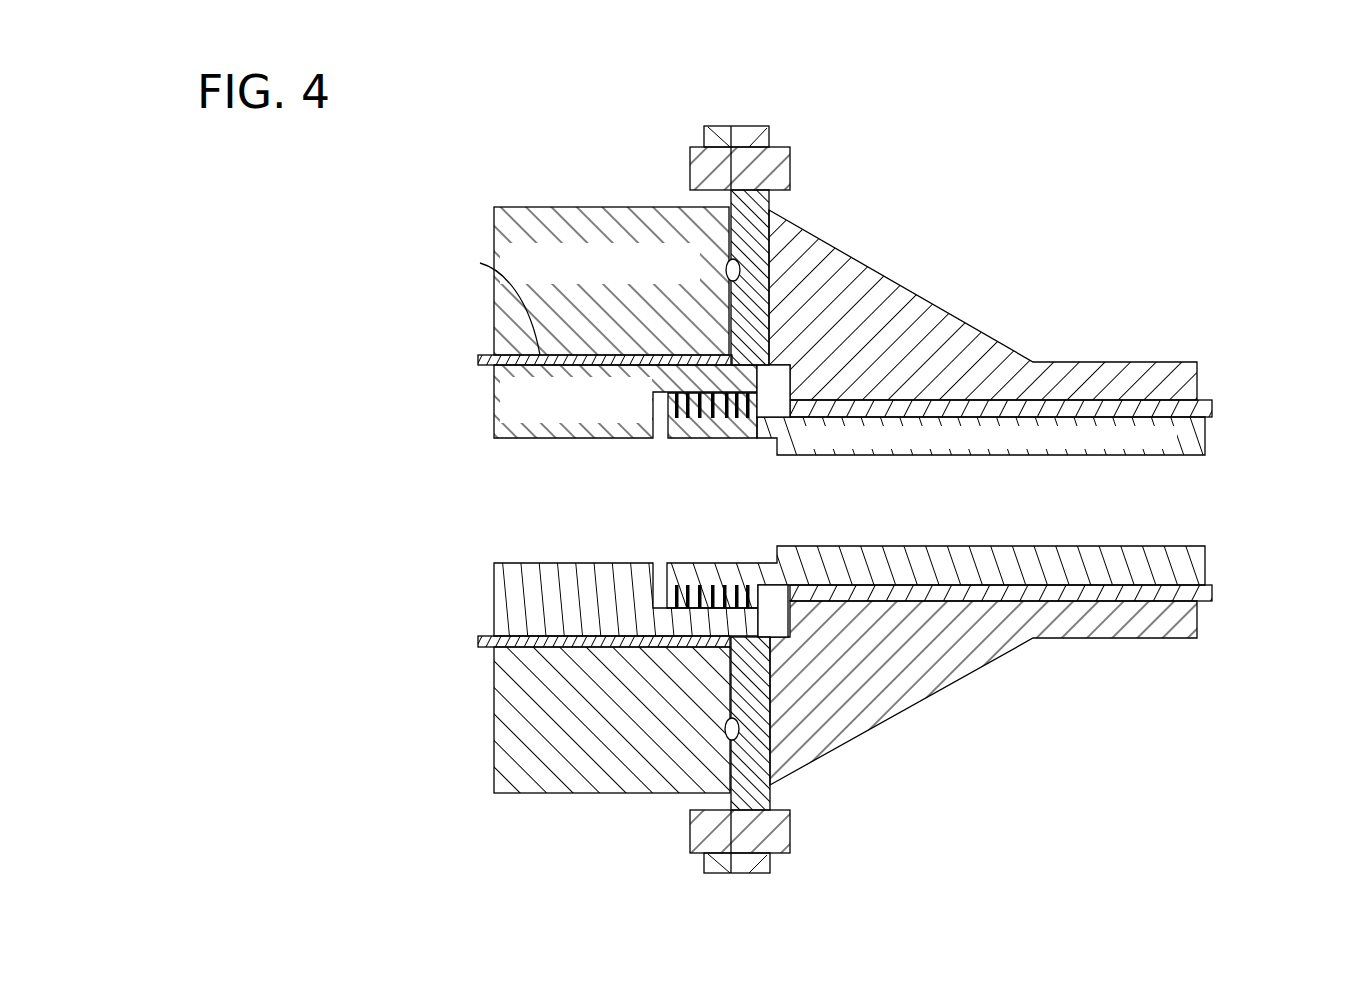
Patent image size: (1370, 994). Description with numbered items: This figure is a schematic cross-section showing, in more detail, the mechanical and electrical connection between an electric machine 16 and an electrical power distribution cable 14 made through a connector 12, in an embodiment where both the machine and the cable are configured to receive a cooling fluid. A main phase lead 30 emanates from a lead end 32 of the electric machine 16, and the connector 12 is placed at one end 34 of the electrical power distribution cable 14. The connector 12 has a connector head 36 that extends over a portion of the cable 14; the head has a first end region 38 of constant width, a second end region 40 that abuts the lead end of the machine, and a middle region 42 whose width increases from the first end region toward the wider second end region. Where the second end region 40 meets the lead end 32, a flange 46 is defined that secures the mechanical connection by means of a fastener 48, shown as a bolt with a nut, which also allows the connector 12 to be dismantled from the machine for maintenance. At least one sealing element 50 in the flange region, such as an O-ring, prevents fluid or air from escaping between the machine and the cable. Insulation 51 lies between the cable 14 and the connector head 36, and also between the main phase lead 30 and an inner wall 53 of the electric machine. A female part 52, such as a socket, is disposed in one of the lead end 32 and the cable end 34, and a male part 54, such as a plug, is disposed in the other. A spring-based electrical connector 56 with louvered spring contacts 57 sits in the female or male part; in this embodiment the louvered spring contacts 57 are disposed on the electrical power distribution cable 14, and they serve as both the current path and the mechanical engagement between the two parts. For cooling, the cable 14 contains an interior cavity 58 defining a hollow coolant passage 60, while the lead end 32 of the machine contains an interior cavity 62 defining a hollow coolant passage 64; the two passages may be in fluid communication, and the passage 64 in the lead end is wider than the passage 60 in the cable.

The connector 12 is at (903, 274).
The electrical power distribution cable 14 is at (915, 687).
The electric machine 16 is at (565, 207).
The main phase lead 30 is at (586, 428).
The lead end 32 is at (730, 693).
The end of the electrical power distribution cable 34 is at (673, 576).
The connector head 36 is at (950, 729).
The first end region 38 is at (1123, 362).
The second end region 40 is at (716, 229).
The middle region 42 is at (985, 664).
The flange 46 is at (678, 124).
The fastener 48 is at (790, 177).
The sealing element 50 is at (741, 266).
The insulation 51 is at (480, 356).
The female part 52 is at (653, 415).
The inner wall 53 is at (490, 301).
The male part 54 is at (715, 449).
The spring-based electrical connector 56 is at (745, 438).
The louvered spring contacts 57 is at (700, 600).
The interior cavity 58 is at (973, 516).
The hollow coolant passage 60 is at (1158, 508).
The interior cavity 62 is at (570, 516).
The hollow coolant passage 64 is at (520, 538).